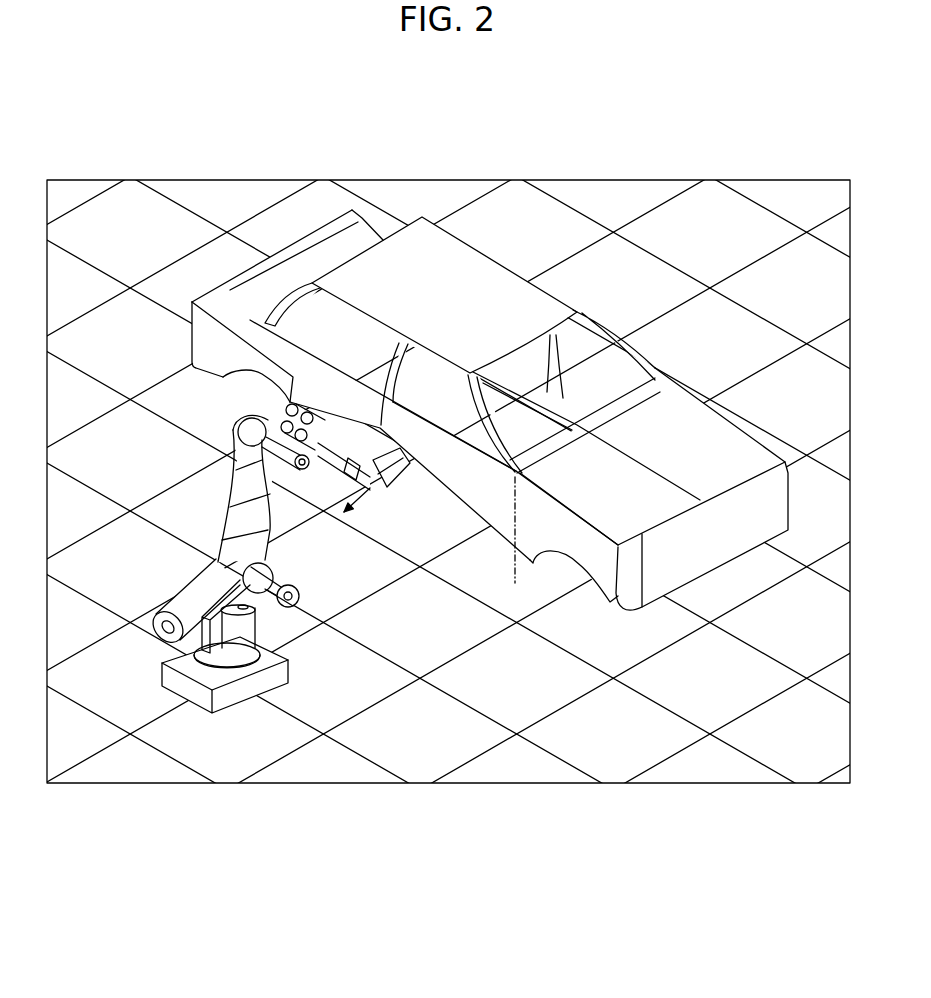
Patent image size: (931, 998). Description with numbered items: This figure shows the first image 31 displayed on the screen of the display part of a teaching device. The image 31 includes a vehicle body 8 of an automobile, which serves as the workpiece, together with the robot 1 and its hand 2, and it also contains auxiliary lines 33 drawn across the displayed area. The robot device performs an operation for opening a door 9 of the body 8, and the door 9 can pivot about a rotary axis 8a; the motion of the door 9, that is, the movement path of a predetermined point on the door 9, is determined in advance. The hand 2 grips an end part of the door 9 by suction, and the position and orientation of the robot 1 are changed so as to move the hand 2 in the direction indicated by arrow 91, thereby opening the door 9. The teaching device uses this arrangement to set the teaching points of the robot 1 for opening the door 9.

The robot 1 is at (165, 622).
The hand 2 is at (402, 478).
The vehicle body 8 is at (697, 557).
The rotary axis 8a is at (517, 590).
The door 9 is at (467, 497).
The image 31 is at (640, 178).
The auxiliary lines 33 is at (767, 205).
The arrow 91 is at (357, 515).